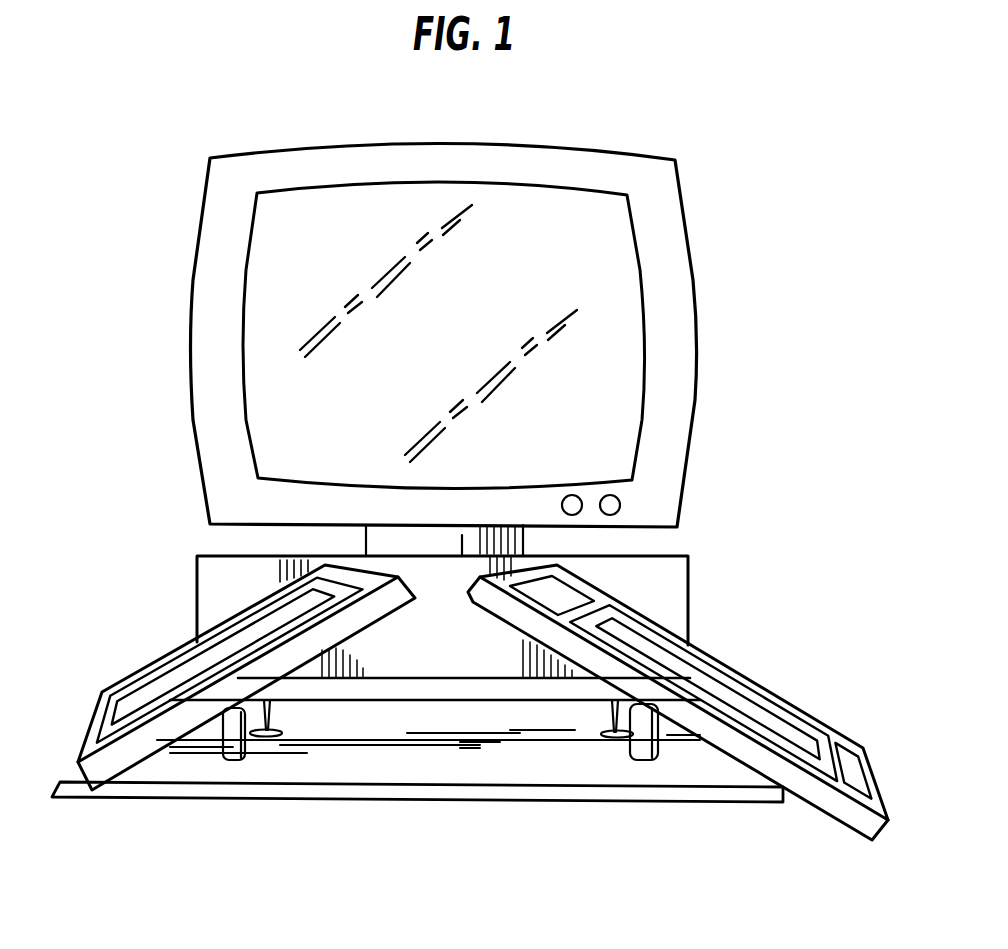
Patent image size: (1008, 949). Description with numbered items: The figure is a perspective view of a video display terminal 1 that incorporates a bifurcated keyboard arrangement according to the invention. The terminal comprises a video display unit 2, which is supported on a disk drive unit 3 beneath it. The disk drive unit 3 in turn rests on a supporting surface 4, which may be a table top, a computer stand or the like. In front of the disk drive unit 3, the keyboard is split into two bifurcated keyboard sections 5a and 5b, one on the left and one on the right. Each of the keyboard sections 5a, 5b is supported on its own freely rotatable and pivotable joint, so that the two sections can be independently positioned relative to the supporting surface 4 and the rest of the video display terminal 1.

The video display terminal 1 is at (712, 532).
The video display unit 2 is at (697, 322).
The disk drive unit 3 is at (690, 600).
The supporting surface 4 is at (242, 793).
The keyboard section 5a is at (732, 667).
The keyboard section 5b is at (167, 657).